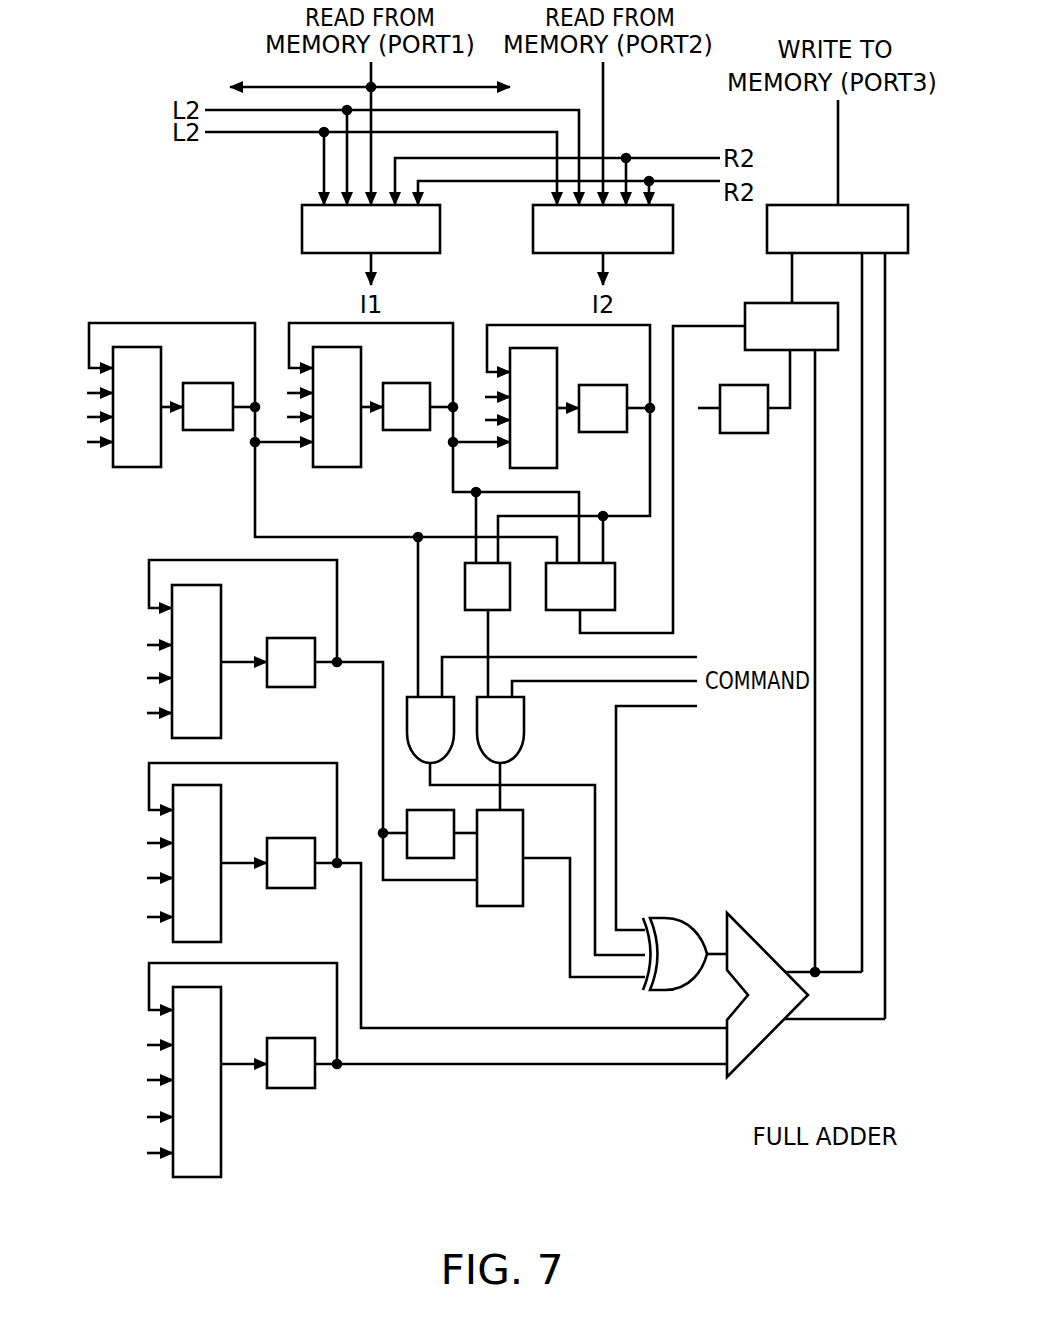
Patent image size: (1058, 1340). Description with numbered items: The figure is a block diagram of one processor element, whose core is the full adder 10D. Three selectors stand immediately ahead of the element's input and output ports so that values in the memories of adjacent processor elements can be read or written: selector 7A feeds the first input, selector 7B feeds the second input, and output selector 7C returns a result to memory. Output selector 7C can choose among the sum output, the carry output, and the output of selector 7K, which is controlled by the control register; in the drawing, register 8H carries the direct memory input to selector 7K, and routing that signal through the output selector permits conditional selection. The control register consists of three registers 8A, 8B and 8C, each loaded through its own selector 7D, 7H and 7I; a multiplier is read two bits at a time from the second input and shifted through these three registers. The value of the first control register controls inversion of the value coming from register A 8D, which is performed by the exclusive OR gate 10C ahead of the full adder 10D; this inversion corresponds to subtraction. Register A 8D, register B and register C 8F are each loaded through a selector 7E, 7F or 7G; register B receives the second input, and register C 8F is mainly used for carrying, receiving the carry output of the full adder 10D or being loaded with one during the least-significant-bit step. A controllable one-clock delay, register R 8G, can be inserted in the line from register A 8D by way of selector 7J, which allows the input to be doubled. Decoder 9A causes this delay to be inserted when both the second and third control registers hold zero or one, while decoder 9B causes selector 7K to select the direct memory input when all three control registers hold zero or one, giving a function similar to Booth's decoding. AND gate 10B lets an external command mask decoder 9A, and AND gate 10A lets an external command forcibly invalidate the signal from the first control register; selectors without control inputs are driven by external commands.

The selector (port 1 input) 7A is at (302, 232).
The selector (port 2 input) 7B is at (533, 232).
The output selector 7C is at (767, 232).
The selector for register M1 7D is at (163, 352).
The selector for register A 7E is at (221, 720).
The selector for register B 7F is at (221, 923).
The selector for register C 7G is at (221, 1133).
The selector for register M2 7H is at (363, 352).
The selector for register M3 7I is at (559, 352).
The selector 7J is at (497, 906).
The selector 7K is at (745, 310).
The register M1 8A is at (205, 432).
The register M2 / register B 8B is at (405, 432).
The register M3 8C is at (603, 432).
The register A 8D is at (285, 638).
The register C 8F is at (285, 1038).
The register R 8G is at (428, 858).
The register R 8H is at (745, 433).
The decoder D1 9A is at (500, 610).
The decoder D2 9B is at (615, 597).
The AND gate 10A is at (407, 719).
The AND gate 10B is at (524, 719).
The exclusive OR gate 10C is at (672, 918).
The full adder 10D is at (769, 1038).